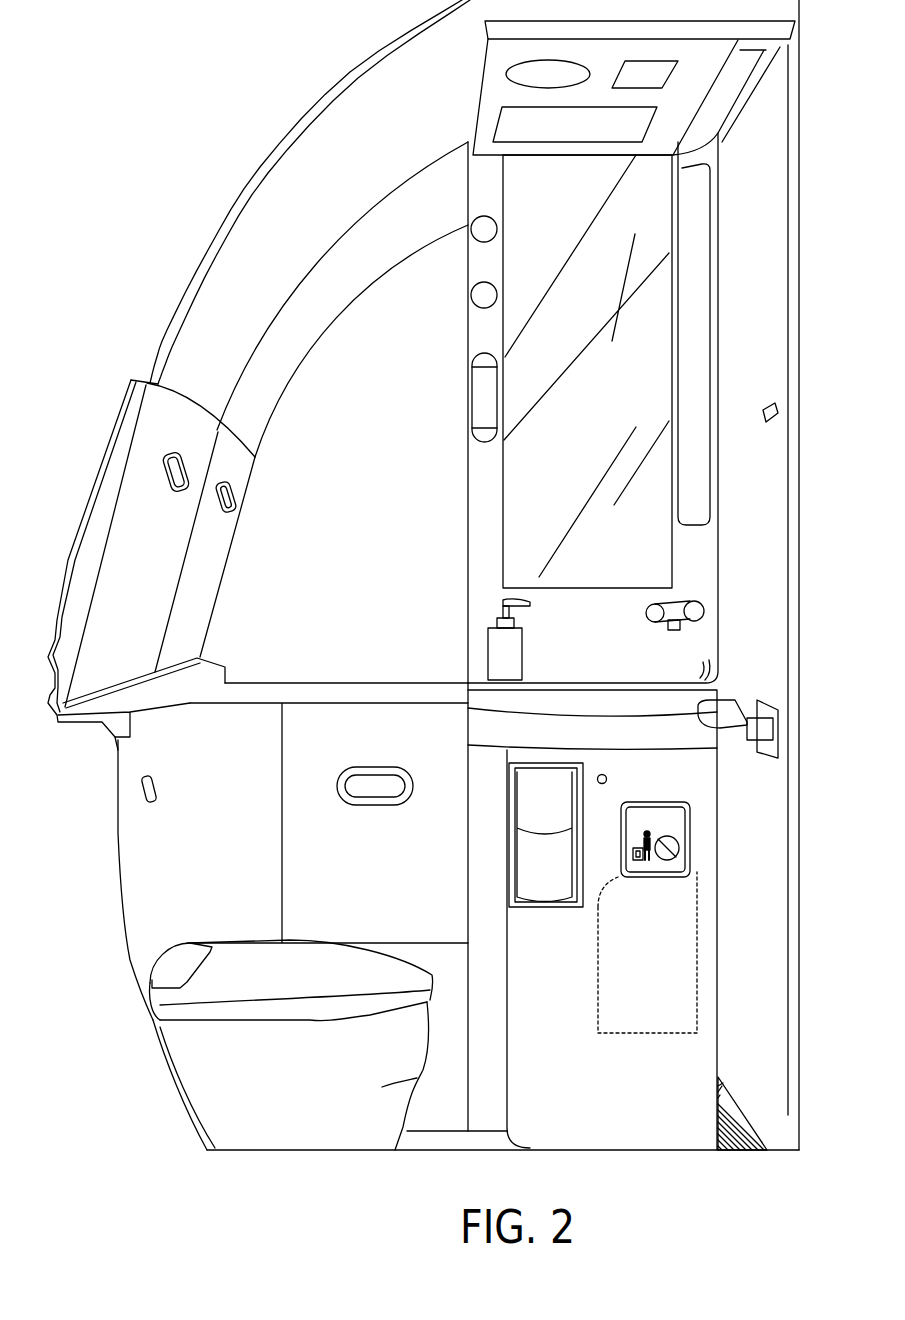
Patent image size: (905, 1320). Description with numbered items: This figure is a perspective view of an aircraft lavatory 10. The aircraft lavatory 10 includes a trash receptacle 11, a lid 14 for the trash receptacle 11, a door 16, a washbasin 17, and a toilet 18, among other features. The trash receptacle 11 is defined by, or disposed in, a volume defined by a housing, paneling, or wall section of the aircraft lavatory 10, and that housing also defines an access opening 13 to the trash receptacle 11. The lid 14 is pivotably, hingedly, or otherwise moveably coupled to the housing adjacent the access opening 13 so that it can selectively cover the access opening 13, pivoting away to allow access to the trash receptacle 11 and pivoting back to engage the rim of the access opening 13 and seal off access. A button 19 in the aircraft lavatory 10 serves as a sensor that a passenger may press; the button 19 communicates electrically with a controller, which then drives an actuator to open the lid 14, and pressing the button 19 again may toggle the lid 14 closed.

The aircraft lavatory 10 is at (128, 132).
The trash receptacle 11 is at (598, 988).
The access opening 13 is at (690, 848).
The lid 14 is at (650, 830).
The door 16 is at (762, 645).
The washbasin 17 is at (558, 608).
The toilet 18 is at (302, 1130).
The button 19 is at (600, 773).